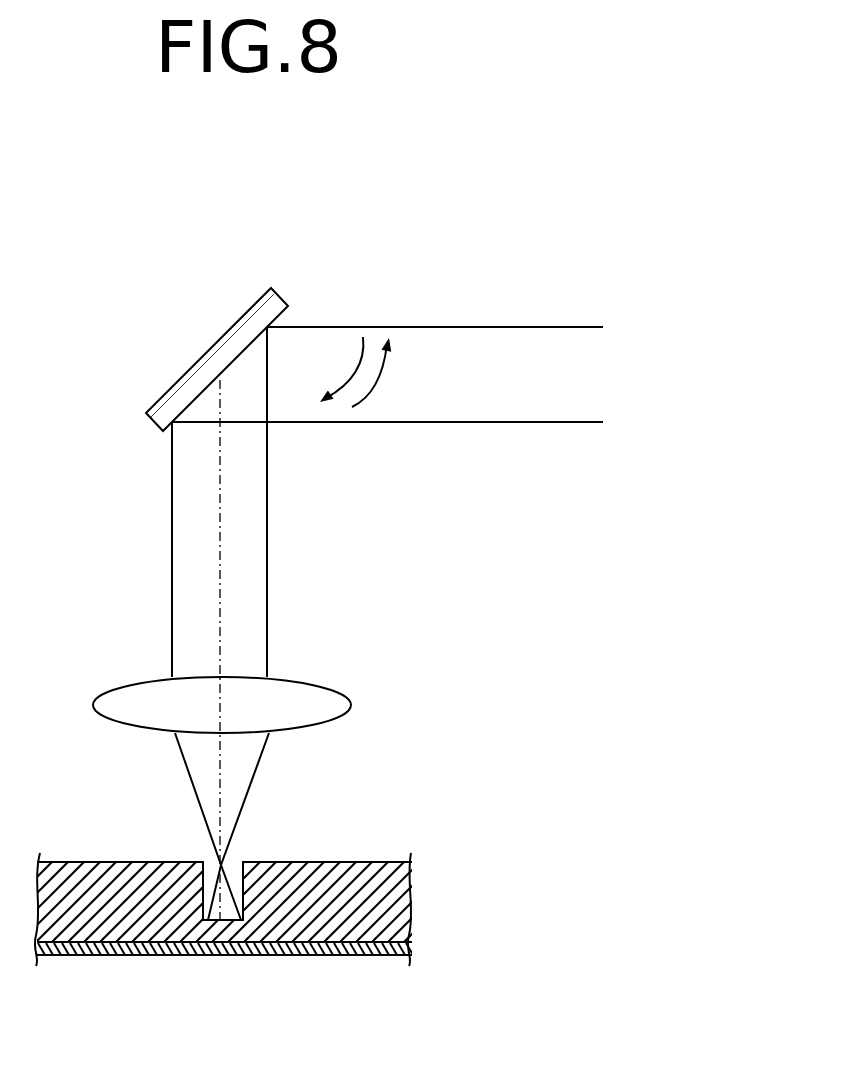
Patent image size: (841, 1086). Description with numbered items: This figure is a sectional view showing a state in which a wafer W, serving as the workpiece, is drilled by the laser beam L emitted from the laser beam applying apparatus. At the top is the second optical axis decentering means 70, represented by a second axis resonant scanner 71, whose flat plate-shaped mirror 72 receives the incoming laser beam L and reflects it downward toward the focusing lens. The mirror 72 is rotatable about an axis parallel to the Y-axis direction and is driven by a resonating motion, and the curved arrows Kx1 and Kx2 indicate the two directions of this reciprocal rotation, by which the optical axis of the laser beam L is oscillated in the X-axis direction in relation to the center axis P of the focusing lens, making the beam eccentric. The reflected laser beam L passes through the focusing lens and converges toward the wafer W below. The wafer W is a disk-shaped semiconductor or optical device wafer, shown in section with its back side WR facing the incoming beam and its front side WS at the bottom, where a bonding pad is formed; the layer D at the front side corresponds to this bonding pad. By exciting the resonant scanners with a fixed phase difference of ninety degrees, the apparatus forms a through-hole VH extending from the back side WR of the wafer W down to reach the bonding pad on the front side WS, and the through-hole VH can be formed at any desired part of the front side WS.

The second optical axis decentering means 70 is at (305, 275).
The second axis resonant scanner 71 is at (213, 335).
The mirror 72 is at (188, 387).
The rotation direction of mirror (first) Kx1 is at (362, 340).
The rotation direction of mirror (second) Kx2 is at (370, 400).
The laser beam L is at (533, 422).
The center axis of the focusing lens P is at (223, 747).
The wafer W is at (249, 910).
The back side of the wafer WR is at (350, 862).
The front side of the wafer WS is at (352, 947).
The through-hole VH is at (232, 867).
The detection layer D (photodetector PD) D is at (127, 957).